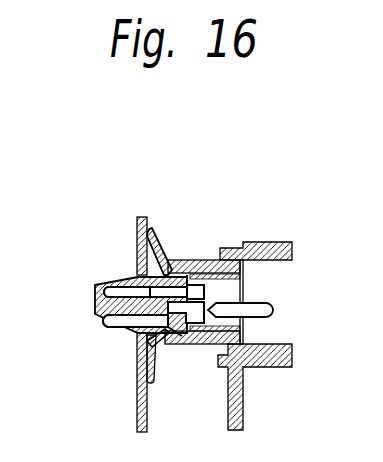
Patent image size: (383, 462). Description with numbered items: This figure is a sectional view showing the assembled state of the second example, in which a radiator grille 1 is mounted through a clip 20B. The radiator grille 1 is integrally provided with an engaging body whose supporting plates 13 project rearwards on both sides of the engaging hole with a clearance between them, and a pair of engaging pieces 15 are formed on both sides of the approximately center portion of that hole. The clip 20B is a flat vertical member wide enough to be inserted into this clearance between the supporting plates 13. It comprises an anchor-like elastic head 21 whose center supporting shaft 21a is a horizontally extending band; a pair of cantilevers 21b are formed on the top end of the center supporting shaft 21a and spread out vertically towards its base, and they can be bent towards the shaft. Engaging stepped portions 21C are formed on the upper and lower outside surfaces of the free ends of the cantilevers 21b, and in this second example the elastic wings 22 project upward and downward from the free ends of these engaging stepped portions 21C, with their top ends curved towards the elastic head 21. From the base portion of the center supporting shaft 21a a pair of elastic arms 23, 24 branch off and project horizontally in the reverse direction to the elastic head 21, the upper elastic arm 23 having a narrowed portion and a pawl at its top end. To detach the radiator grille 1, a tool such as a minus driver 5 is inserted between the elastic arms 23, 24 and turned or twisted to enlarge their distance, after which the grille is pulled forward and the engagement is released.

The radiator grille 1 is at (279, 249).
The minus driver 5 is at (258, 312).
The supporting plate 13 is at (123, 277).
The engaging piece 15 is at (178, 309).
The clip 20B is at (99, 266).
The elastic head 21 is at (117, 305).
The center supporting shaft 21a is at (123, 331).
The cantilever 21b is at (136, 289).
The engaging stepped portion 21C is at (174, 266).
The elastic wing 22 is at (150, 236).
The upper elastic arm 23 is at (195, 256).
The lower elastic arm 24 is at (193, 318).